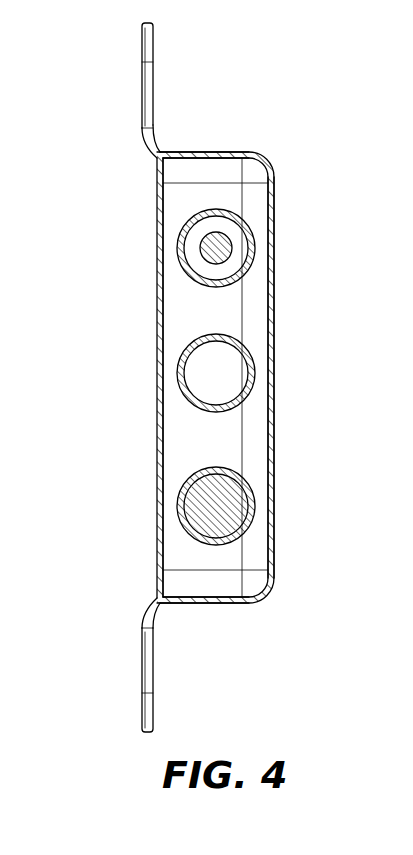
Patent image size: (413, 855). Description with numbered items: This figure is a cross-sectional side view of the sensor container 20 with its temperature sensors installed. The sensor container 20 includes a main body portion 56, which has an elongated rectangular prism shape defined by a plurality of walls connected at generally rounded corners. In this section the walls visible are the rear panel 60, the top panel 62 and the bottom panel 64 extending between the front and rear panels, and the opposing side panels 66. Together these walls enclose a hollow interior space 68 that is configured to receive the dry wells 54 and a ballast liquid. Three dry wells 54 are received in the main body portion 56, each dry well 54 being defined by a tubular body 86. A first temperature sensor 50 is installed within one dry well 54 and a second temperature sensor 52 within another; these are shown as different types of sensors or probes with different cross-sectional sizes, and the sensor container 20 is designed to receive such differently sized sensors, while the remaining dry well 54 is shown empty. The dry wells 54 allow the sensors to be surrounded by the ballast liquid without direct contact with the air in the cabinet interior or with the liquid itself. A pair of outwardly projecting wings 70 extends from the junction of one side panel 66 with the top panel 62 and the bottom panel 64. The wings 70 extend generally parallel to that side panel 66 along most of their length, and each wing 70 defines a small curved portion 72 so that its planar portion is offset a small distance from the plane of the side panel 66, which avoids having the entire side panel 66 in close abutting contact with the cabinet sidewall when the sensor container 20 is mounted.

The sensor container 20 is at (372, 117).
The first temperature sensor 50 is at (233, 248).
The second temperature sensor 52 is at (250, 506).
The dry wells 54 is at (180, 222).
The main body portion 56 is at (276, 216).
The rear panel 60 is at (175, 406).
The top panel 62 is at (217, 151).
The bottom panel 64 is at (204, 604).
The side panels 66 is at (156, 304).
The hollow interior space 68 is at (205, 443).
The wings 70 is at (141, 83).
The curved portion 72 is at (152, 151).
The tubular body 86 is at (178, 246).